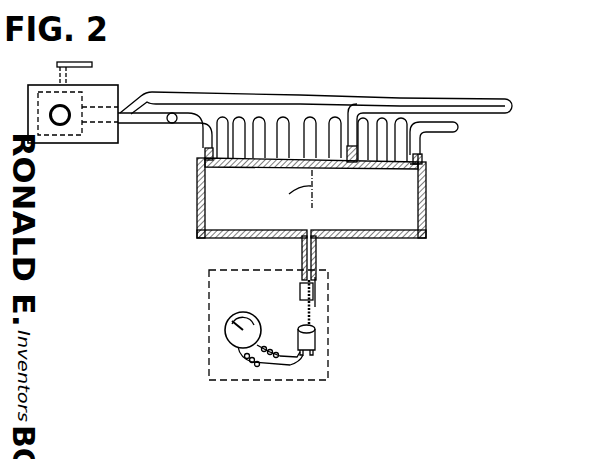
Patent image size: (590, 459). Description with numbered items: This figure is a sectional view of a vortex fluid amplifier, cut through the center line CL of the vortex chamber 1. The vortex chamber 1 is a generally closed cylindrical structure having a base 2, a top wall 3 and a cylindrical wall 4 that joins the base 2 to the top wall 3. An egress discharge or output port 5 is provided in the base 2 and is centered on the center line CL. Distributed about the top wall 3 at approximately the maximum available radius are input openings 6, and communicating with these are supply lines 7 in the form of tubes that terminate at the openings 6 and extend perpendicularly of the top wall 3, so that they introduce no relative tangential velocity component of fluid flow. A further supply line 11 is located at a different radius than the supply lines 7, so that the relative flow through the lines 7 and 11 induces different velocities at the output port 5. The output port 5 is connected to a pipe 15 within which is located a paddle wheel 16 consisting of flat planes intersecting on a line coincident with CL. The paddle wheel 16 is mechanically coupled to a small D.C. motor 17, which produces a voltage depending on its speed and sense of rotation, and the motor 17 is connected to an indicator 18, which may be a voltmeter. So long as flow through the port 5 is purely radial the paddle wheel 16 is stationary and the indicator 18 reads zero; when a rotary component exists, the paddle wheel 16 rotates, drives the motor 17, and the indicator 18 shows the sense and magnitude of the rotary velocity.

The vortex chamber 1 is at (305, 211).
The base 2 is at (246, 238).
The top wall 3 is at (394, 161).
The cylindrical wall 4 is at (197, 203).
The output port 5 is at (310, 231).
The input openings 6 is at (206, 167).
The supply lines 7 is at (200, 140).
The further supply line 11 is at (372, 108).
The pipe 15 is at (316, 253).
The paddle wheel 16 is at (313, 292).
The D.C. motor 17 is at (315, 340).
The indicator 18 is at (250, 313).